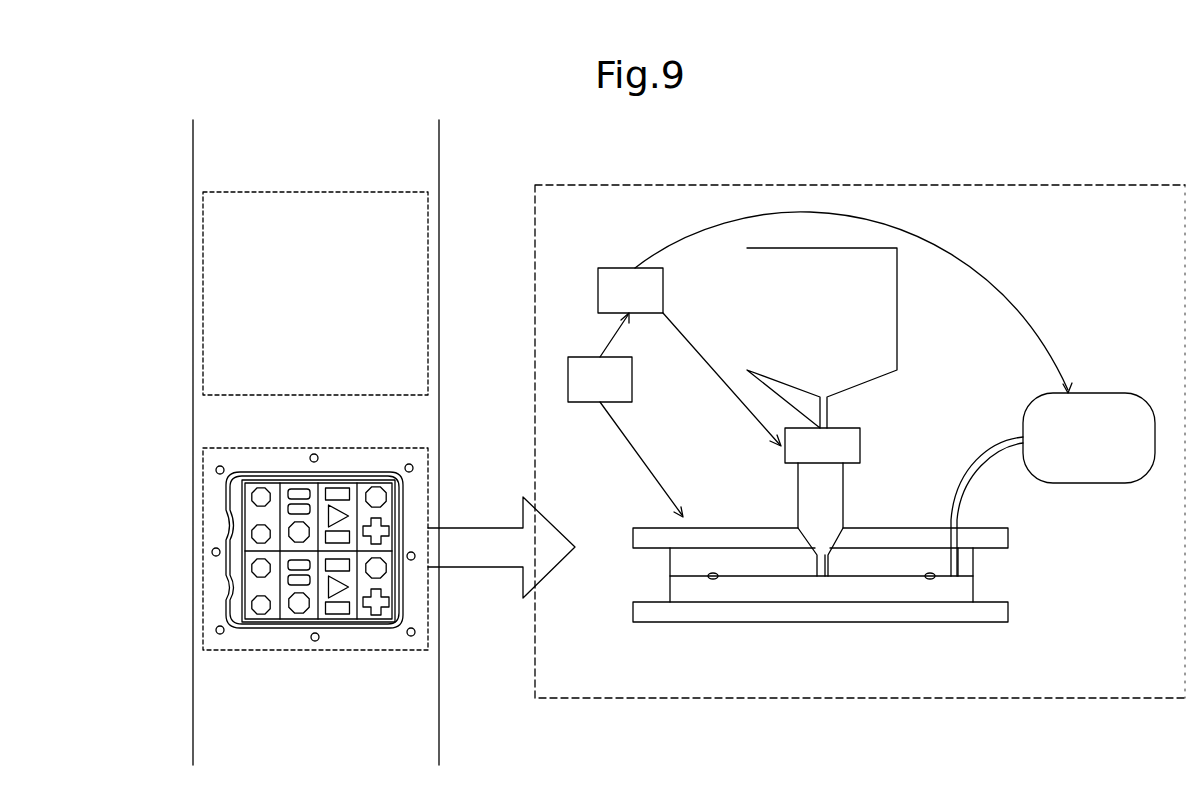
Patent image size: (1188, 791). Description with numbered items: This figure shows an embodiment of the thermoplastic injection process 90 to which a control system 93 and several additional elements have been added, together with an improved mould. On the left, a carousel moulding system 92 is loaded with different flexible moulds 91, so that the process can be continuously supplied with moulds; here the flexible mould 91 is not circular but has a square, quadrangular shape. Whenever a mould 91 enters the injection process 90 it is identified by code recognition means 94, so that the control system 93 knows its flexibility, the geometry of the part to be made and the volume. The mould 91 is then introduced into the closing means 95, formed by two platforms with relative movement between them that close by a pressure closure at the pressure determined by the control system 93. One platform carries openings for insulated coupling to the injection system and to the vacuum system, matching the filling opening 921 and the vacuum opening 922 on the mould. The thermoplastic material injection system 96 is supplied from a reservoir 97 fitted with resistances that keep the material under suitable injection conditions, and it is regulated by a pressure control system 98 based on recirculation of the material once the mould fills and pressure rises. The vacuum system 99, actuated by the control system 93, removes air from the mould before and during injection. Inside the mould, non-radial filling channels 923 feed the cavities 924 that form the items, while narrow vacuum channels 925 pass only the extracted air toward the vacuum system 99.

The injection process 90 is at (718, 185).
The flexible mould 91 is at (205, 258).
The carousel moulding system 92 is at (440, 190).
The control system 93 is at (835, 329).
The code recognition means 94 is at (625, 415).
The closing means 95 is at (633, 538).
The thermoplastic material injection system 96 is at (867, 470).
The reservoir 97 is at (897, 290).
The pressure control system 98 is at (822, 445).
The vacuum system 99 is at (1092, 393).
The filling opening 921 is at (270, 630).
The opening 922 is at (398, 632).
The thermoplastic material filling channels 923 is at (757, 578).
The cavities 924 is at (712, 580).
The vacuum channels 925 is at (340, 630).